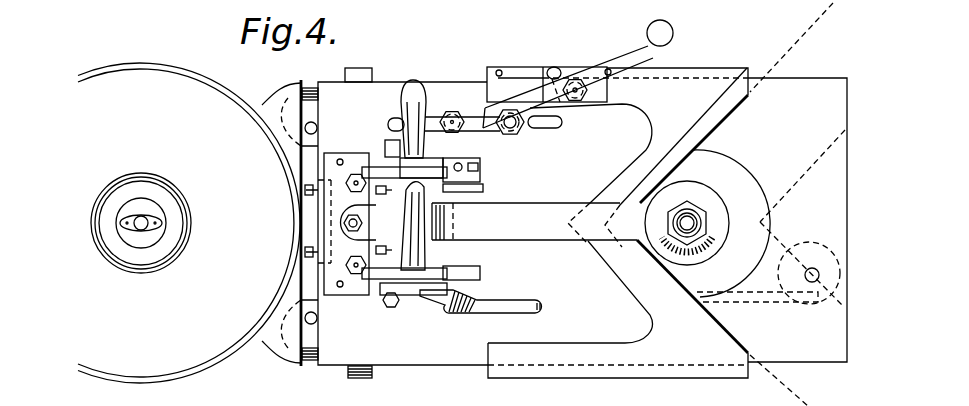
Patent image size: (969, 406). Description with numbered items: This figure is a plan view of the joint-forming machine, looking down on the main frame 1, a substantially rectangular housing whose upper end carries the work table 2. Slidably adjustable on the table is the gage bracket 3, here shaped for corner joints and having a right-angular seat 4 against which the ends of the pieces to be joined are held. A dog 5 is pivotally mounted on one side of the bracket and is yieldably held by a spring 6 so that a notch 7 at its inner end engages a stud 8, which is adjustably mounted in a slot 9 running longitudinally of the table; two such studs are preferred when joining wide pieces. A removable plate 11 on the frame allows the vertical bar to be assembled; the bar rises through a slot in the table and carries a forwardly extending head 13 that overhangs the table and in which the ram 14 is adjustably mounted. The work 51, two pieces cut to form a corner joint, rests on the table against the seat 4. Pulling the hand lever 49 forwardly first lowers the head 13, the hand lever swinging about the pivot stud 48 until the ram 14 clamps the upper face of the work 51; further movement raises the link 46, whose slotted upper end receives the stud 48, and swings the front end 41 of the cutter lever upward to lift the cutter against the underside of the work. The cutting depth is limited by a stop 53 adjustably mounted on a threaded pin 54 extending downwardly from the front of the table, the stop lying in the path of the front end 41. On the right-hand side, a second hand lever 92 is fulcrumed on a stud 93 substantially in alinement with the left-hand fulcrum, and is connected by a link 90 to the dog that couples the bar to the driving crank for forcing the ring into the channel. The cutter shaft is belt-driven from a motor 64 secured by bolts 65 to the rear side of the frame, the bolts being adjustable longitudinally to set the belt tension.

The main frame 1 is at (423, 368).
The work table 2 is at (570, 292).
The gage bracket 3 is at (693, 90).
The right-angular seat 4 is at (700, 141).
The dog 5 is at (623, 52).
The spring 6 is at (552, 72).
The notch 7 is at (508, 134).
The stud 8 is at (452, 110).
The slot 9 is at (558, 128).
The removable plate 11 is at (324, 226).
The head 13 is at (534, 221).
The ram 14 is at (709, 192).
The front end of the lever 41 is at (786, 306).
The link 46 is at (482, 309).
The pivot stud 48 is at (388, 302).
The hand lever 49 is at (420, 280).
The work 51 is at (822, 157).
The stop 53 is at (807, 242).
The threaded pin 54 is at (796, 314).
The motor 64 is at (189, 223).
The bolts 65 is at (307, 88).
The link 90 is at (462, 186).
The hand lever 92 is at (427, 168).
The stud 93 is at (440, 196).